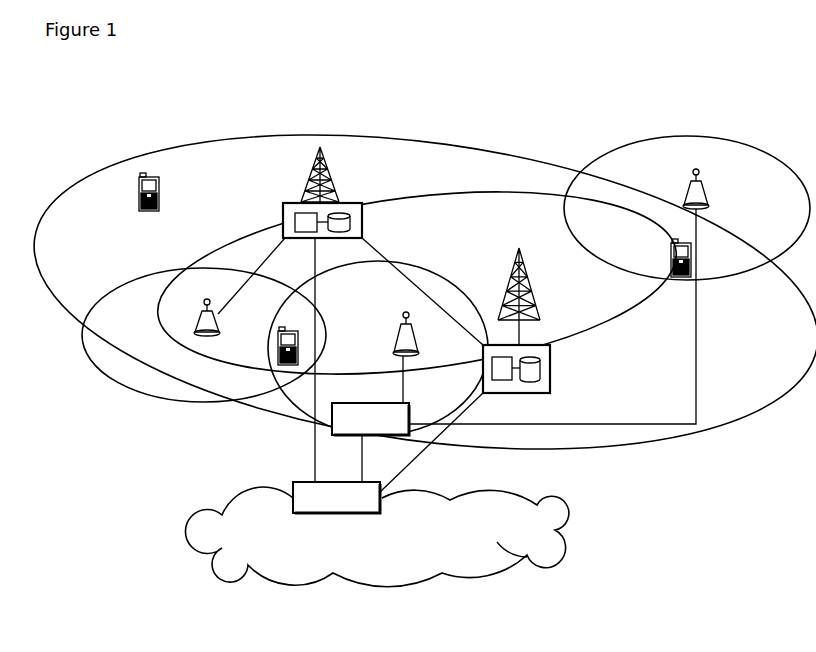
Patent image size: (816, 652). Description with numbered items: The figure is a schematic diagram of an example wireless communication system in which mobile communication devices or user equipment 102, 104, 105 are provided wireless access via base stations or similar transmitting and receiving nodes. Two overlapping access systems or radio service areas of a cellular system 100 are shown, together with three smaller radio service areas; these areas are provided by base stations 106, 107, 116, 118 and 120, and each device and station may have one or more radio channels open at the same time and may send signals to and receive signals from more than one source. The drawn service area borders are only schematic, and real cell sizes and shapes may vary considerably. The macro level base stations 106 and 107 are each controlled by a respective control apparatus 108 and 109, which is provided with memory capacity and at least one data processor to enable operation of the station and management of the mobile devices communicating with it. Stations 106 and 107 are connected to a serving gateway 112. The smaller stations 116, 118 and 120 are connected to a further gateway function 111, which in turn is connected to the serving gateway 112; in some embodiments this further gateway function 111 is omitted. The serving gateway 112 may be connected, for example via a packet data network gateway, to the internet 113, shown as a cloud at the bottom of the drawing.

The cellular system 100 is at (90, 167).
The mobile communication device 102 is at (138, 203).
The mobile communication device 104 is at (278, 353).
The mobile communication device 105 is at (680, 278).
The base station 106 is at (309, 182).
The base station 107 is at (535, 297).
The control apparatus 108 is at (283, 214).
The control apparatus 109 is at (543, 387).
The further gateway function 111 is at (338, 423).
The serving gateway 112 is at (294, 482).
The internet 113 is at (242, 522).
The base station 116 is at (687, 190).
The base station 118 is at (393, 347).
The base station 120 is at (199, 320).